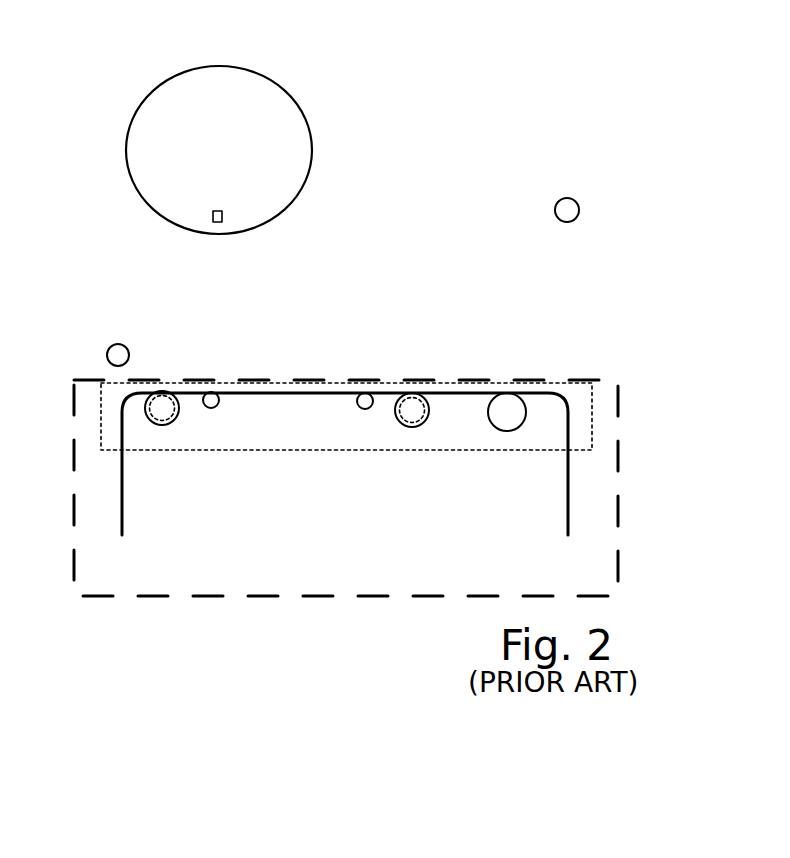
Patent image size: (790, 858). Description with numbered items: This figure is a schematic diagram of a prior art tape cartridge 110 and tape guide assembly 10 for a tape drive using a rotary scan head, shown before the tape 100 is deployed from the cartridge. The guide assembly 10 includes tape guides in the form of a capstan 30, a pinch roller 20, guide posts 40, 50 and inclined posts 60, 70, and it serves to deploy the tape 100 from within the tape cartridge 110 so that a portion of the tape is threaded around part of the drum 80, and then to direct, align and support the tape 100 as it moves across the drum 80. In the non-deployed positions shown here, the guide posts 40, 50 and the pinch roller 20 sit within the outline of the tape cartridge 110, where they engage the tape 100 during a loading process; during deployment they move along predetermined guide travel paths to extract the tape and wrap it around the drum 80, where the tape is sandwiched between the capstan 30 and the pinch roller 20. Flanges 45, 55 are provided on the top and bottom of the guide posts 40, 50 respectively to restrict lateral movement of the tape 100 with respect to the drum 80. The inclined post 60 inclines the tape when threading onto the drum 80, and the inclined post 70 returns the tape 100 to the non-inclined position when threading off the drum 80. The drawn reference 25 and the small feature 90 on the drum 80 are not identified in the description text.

The tape guide assembly 10 is at (598, 308).
The pinch roller 20 is at (507, 405).
The circuit board 25 is at (101, 428).
The capstan 30 is at (564, 198).
The guide post 40 is at (168, 400).
The flange 45 is at (173, 425).
The guide post 50 is at (415, 403).
The flange 55 is at (425, 427).
The inclined post 60 is at (212, 394).
The inclined post 70 is at (367, 395).
The drum 80 is at (189, 93).
The tab 90 is at (224, 223).
The tape 100 is at (568, 498).
The tape cartridge 110 is at (358, 555).